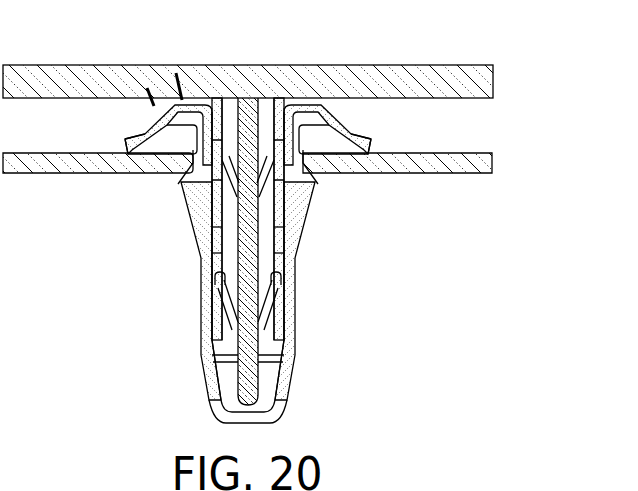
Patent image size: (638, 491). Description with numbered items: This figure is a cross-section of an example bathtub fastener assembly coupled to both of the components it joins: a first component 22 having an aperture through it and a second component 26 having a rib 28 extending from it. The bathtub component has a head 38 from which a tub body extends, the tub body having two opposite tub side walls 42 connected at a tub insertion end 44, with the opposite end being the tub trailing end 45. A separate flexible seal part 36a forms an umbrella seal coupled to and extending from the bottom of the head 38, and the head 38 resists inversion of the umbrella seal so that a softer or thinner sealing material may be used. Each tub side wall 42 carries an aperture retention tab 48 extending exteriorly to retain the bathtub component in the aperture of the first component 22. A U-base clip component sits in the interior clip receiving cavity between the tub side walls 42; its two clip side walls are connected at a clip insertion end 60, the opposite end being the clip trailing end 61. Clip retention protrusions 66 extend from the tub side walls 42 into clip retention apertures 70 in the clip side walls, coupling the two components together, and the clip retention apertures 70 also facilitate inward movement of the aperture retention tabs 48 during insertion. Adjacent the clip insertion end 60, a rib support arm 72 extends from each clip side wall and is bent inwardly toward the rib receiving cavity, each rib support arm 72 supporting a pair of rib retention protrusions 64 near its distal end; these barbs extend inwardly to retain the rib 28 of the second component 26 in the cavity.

The first component 22 is at (72, 167).
The second component 26 is at (475, 75).
The rib 28 is at (248, 117).
The umbrella flexible seal part 36a is at (128, 147).
The head 38 is at (355, 119).
The tub side walls 42 is at (205, 300).
The tub insertion end 44 is at (252, 422).
The tub trailing end 45 is at (150, 98).
The aperture retention tab 48 is at (182, 183).
The clip insertion end 60 is at (236, 418).
The clip trailing end 61 is at (181, 98).
The rib retention protrusions 64 is at (222, 188).
The clip retention protrusions 66 is at (203, 256).
The clip retention apertures 70 is at (202, 225).
The rib support arm 72 is at (216, 344).